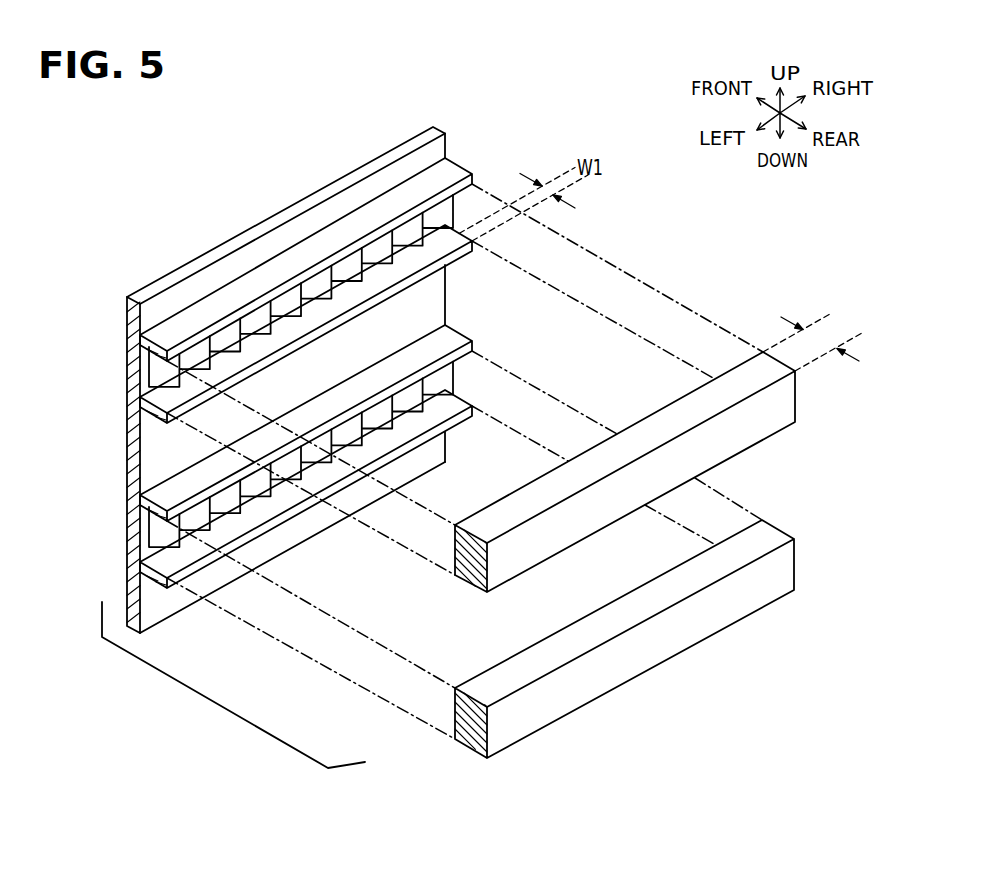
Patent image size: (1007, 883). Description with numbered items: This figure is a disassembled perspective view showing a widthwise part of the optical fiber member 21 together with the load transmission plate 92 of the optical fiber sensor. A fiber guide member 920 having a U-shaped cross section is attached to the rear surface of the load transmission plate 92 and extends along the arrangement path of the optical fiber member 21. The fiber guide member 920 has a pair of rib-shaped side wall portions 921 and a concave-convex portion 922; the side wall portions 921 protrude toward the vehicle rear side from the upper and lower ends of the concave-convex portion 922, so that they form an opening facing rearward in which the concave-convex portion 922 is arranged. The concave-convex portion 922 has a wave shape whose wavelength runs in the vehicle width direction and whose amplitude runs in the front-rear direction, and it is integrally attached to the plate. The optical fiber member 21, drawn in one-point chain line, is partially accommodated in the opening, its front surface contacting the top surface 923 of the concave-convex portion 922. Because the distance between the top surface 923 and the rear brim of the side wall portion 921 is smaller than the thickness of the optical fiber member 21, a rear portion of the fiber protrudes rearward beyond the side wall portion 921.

The optical fiber member 21 is at (668, 418).
The load transmission plate 92 is at (267, 158).
The fiber guide member 920 is at (472, 142).
The side wall portion 921 is at (410, 197).
The concave-convex portion 922 is at (330, 287).
The top surface 923 is at (378, 264).